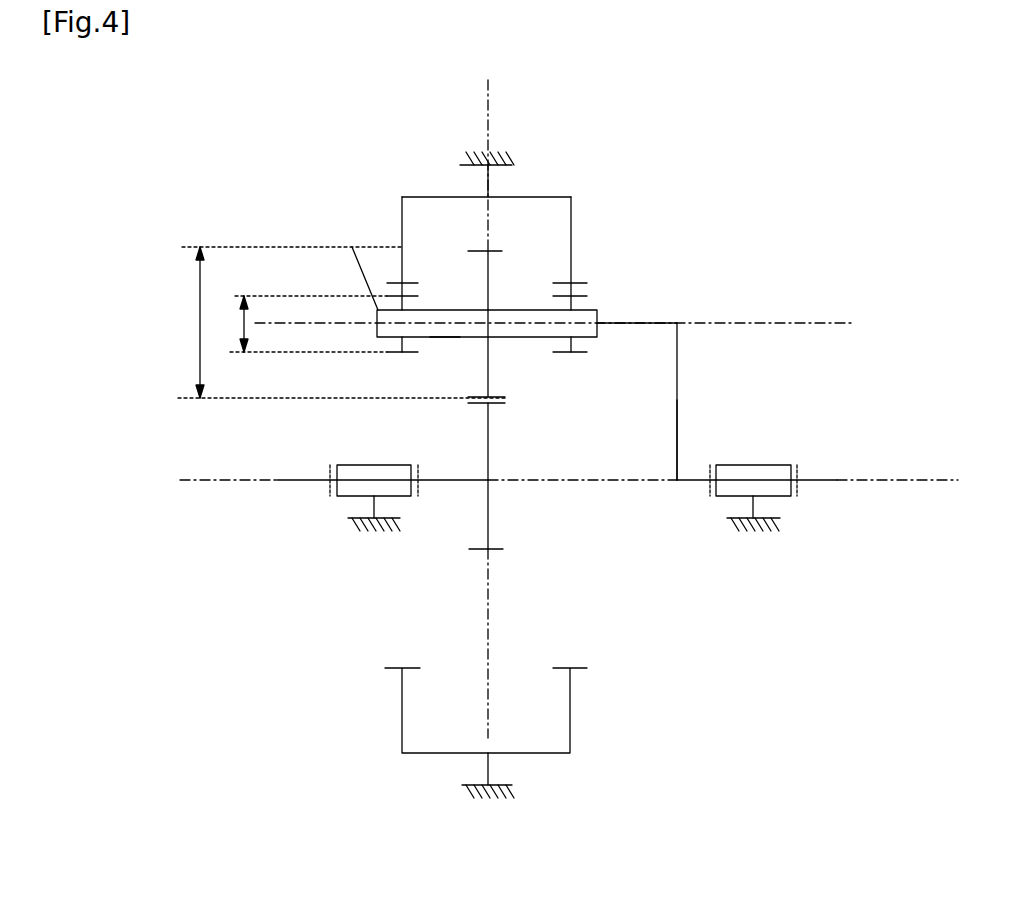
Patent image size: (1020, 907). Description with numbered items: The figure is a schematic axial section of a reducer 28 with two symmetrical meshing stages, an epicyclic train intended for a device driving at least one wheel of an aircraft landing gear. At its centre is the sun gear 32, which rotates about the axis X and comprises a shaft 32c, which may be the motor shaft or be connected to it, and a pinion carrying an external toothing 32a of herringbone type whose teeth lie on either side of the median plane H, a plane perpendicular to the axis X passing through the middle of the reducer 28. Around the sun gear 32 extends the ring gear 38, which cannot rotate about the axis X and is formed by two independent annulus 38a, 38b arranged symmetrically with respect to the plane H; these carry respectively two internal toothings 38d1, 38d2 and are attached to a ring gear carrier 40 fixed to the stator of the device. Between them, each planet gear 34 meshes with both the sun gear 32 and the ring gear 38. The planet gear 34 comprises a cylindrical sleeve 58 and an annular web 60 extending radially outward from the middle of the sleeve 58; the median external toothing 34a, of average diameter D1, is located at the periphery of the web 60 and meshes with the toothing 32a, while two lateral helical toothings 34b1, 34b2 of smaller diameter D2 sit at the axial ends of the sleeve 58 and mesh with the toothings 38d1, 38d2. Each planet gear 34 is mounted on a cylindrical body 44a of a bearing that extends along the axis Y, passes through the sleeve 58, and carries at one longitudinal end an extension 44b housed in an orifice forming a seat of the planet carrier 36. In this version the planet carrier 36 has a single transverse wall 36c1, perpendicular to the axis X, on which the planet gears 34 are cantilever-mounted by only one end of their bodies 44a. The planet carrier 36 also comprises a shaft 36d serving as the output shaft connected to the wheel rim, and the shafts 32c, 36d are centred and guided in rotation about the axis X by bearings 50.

The reducer 28 is at (688, 160).
The sun gear 32 is at (499, 515).
The external toothing 32a is at (498, 553).
The shaft 32c is at (317, 482).
The planet gears 34 is at (476, 310).
The median external toothing 34a is at (490, 251).
The lateral external toothing 34b1 is at (393, 352).
The lateral external toothing 34b2 is at (577, 354).
The planet carrier 36 is at (715, 383).
The transverse wall 36c1 is at (677, 420).
The shaft 36d is at (805, 482).
The ring gear 38 is at (513, 216).
The annulus 38a is at (402, 230).
The annulus 38b is at (571, 247).
The internal toothing 38d1 is at (408, 283).
The internal toothing 38d2 is at (588, 280).
The ring gear carrier 40 is at (490, 183).
The cylindrical body 44a is at (512, 323).
The extension 44b is at (641, 322).
The bearings 50 is at (357, 453).
The cylindrical sleeve 58 is at (442, 338).
The annular web 60 is at (492, 373).
The median plane H is at (492, 113).
The axis of rotation X is at (917, 480).
The axis Y is at (828, 322).
The average diameter D1 is at (179, 322).
The diameter D2 is at (226, 324).